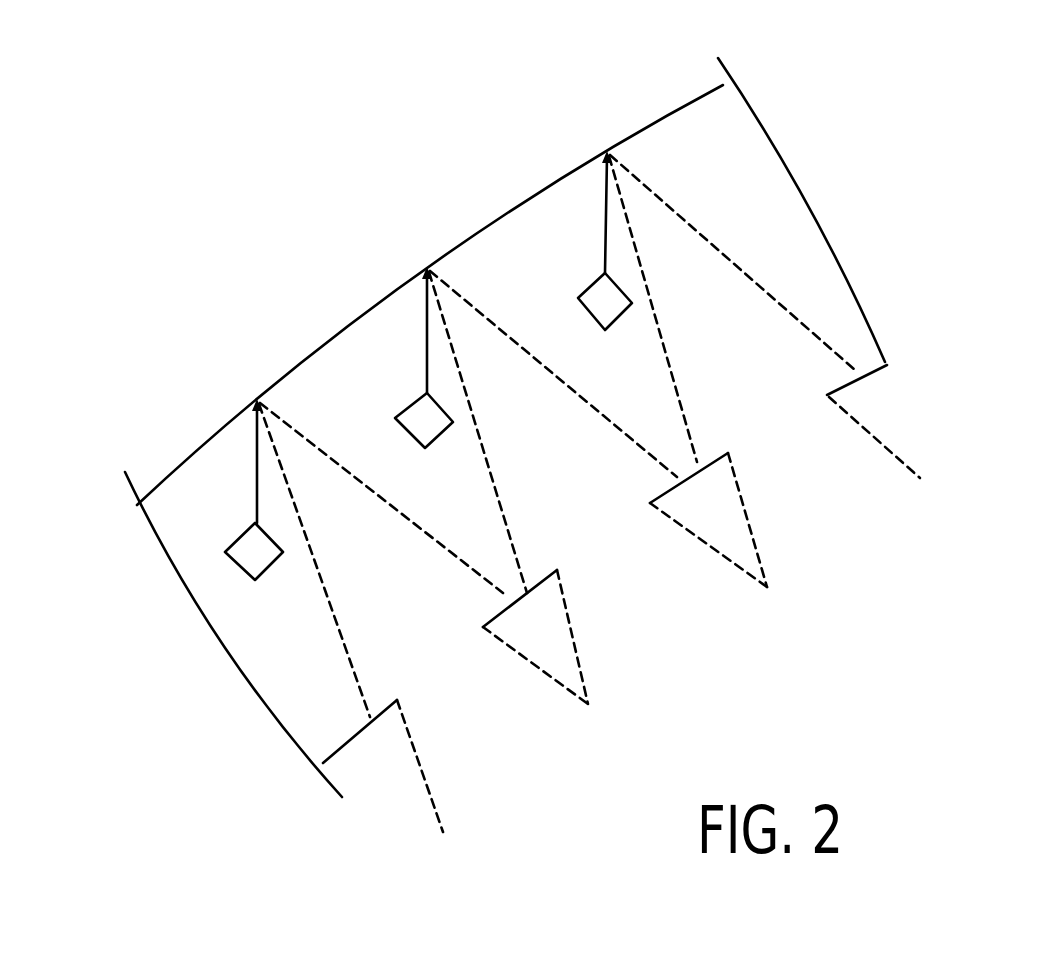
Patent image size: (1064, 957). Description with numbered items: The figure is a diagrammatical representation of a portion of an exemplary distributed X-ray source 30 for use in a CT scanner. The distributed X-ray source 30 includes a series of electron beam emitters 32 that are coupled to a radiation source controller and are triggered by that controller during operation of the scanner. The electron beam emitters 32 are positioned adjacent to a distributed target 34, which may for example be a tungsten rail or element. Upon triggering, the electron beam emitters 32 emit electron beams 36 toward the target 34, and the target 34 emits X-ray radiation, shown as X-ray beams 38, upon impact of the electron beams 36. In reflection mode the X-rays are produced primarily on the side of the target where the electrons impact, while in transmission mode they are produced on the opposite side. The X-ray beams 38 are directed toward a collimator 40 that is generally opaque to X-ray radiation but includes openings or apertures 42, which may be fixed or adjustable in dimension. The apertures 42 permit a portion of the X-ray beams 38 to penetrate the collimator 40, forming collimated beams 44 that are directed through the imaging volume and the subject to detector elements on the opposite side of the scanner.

The distributed X-ray source 30 is at (942, 380).
The electron beam emitters 32 is at (241, 537).
The distributed target 34 is at (195, 448).
The electron beams 36 is at (258, 462).
The X-ray beams 38 is at (341, 640).
The collimator 40 is at (362, 733).
The apertures 42 is at (415, 673).
The collimated beams 44 is at (463, 743).